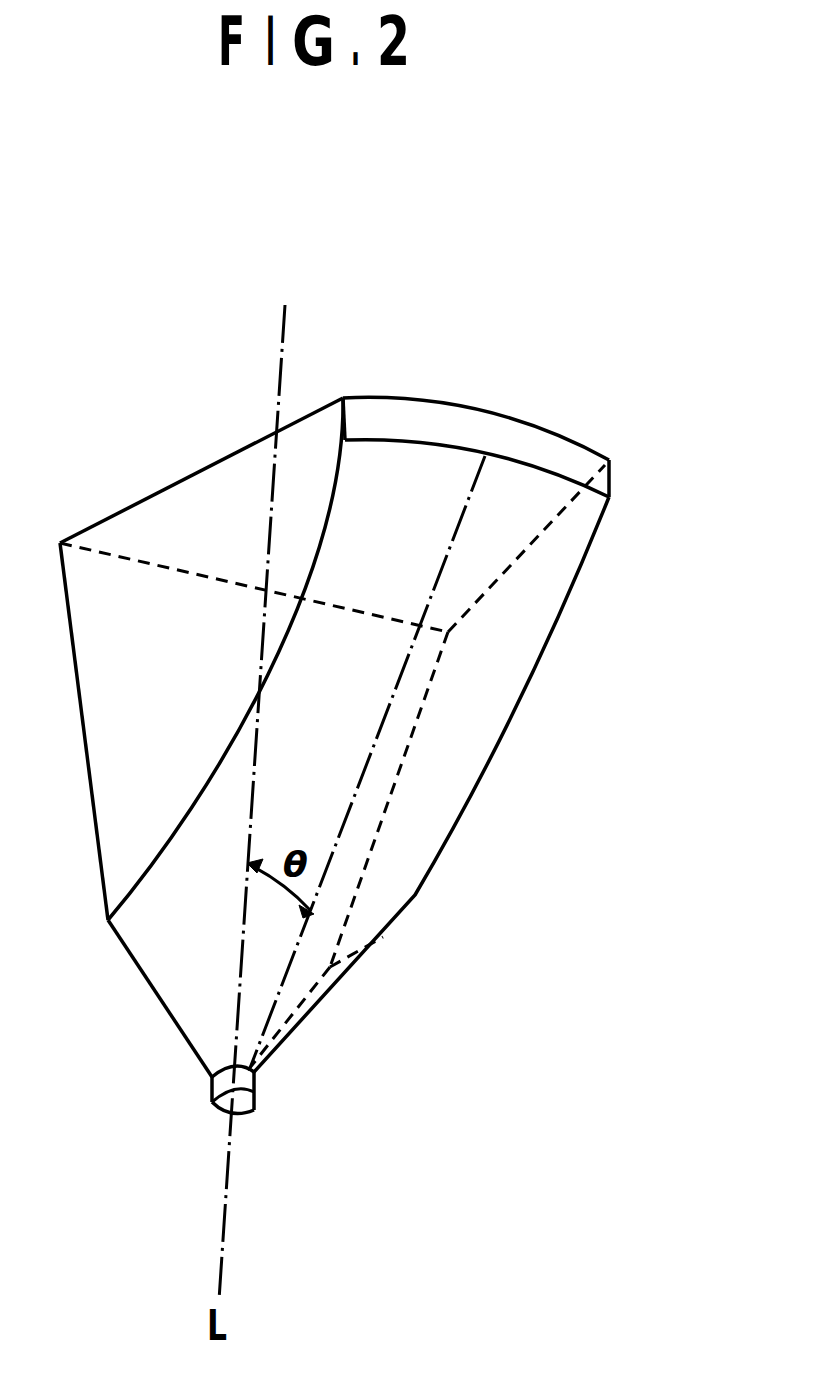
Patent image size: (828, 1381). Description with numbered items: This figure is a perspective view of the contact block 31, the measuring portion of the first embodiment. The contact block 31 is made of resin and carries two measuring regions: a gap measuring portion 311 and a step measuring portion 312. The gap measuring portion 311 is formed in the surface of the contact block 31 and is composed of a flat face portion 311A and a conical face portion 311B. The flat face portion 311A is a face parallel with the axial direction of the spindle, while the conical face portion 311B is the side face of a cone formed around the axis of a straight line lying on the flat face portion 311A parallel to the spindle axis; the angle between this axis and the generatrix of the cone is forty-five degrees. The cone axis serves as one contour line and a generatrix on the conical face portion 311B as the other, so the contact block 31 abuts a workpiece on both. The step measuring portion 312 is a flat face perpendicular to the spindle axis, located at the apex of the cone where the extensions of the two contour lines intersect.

The contact block 31 is at (600, 409).
The gap measuring portion 311 is at (608, 798).
The flat face portion 311A is at (323, 792).
The conical face portion 311B is at (380, 892).
The step measuring portion 312 is at (217, 1108).